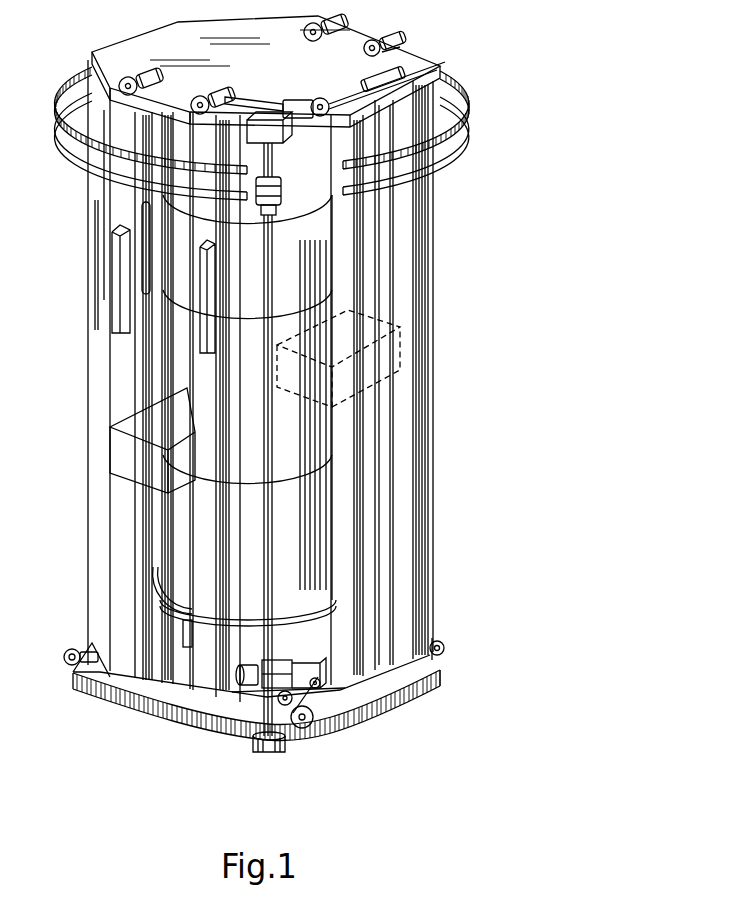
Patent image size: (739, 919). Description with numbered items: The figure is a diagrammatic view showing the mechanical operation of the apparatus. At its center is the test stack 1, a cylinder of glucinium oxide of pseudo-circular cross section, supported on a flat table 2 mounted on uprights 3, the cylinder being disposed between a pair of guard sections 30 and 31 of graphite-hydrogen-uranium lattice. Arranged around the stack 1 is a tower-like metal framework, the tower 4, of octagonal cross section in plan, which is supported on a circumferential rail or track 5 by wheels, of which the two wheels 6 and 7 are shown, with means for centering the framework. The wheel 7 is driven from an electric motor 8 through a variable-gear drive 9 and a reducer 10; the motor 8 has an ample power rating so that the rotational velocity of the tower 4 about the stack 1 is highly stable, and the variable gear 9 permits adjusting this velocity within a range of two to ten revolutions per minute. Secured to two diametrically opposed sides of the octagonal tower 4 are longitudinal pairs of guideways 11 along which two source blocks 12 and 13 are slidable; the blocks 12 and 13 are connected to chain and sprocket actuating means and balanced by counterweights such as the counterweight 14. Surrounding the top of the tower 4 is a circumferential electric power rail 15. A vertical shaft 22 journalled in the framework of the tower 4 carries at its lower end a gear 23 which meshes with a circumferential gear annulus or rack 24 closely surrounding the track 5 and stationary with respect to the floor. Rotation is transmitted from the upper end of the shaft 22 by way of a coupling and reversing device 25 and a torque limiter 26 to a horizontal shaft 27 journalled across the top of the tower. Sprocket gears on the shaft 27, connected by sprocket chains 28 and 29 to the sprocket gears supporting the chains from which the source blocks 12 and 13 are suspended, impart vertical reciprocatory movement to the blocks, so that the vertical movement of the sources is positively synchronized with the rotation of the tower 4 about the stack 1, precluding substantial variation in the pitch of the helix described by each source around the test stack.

The stack 1 is at (247, 397).
The flat table 2 is at (173, 598).
The uprights 3 is at (183, 633).
The tower 4 is at (365, 563).
The circumferential rail or track 5 is at (152, 712).
The wheel 6 is at (68, 657).
The wheel 7 is at (308, 732).
The electric motor 8 is at (247, 667).
The variable-gear drive 9 is at (280, 666).
The reducer 10 is at (305, 664).
The guideways 11 is at (152, 254).
The source block 12 is at (126, 458).
The source block 13 is at (404, 334).
The counterweight 14 is at (117, 271).
The circumferential electric power rail 15 is at (60, 132).
The vertical shaft 22 is at (268, 579).
The gear 23 is at (266, 752).
The circumferential gear annulus or rack 24 is at (380, 717).
The coupling and reversing device 25 is at (282, 193).
The torque limiter 26 is at (284, 101).
The horizontal shaft 27 is at (348, 101).
The sprocket chain 28 is at (192, 101).
The sprocket chain 29 is at (382, 63).
The guard section 30 is at (247, 287).
The guard section 31 is at (247, 491).